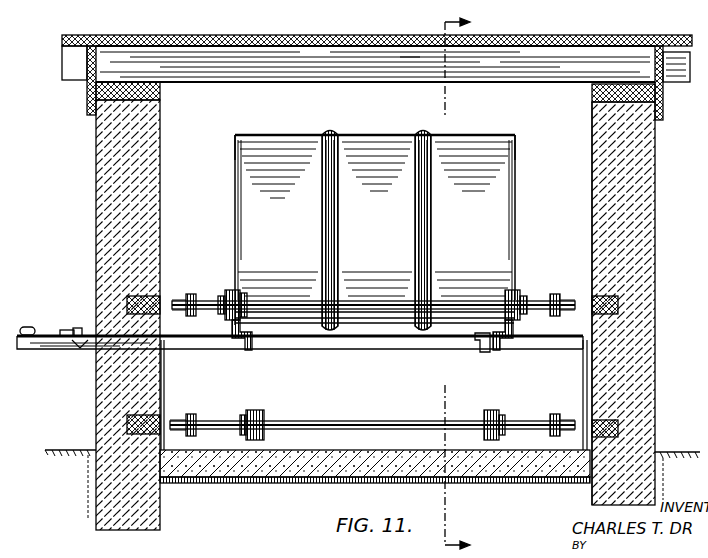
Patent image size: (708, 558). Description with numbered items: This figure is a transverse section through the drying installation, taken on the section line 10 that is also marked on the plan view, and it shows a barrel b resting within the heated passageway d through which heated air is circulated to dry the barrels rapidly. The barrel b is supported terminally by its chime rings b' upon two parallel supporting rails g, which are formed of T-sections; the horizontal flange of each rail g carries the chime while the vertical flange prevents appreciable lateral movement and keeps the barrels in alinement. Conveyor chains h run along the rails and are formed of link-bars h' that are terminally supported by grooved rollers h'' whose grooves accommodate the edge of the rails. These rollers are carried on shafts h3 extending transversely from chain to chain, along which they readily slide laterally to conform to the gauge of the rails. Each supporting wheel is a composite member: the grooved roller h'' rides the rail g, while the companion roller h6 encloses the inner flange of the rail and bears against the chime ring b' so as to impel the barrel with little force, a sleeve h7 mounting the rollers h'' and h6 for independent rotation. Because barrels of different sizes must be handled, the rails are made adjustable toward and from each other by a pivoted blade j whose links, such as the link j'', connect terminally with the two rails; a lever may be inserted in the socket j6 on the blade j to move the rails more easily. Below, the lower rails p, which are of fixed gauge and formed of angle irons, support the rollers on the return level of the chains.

The barrel b is at (375, 219).
The chime ring b' is at (368, 128).
The heated passageway d is at (572, 186).
The conveyor chain h is at (372, 331).
The link-bar h' is at (373, 349).
The grooved roller h'' is at (374, 348).
The shaft h3 is at (400, 330).
The roller h6 is at (233, 291).
The sleeve h7 is at (245, 300).
The supporting rail g is at (232, 335).
The pivoted blade j is at (300, 324).
The socket j6 is at (28, 327).
The link j'' is at (275, 335).
The lower rail p is at (228, 478).
The section line 10 is at (469, 283).